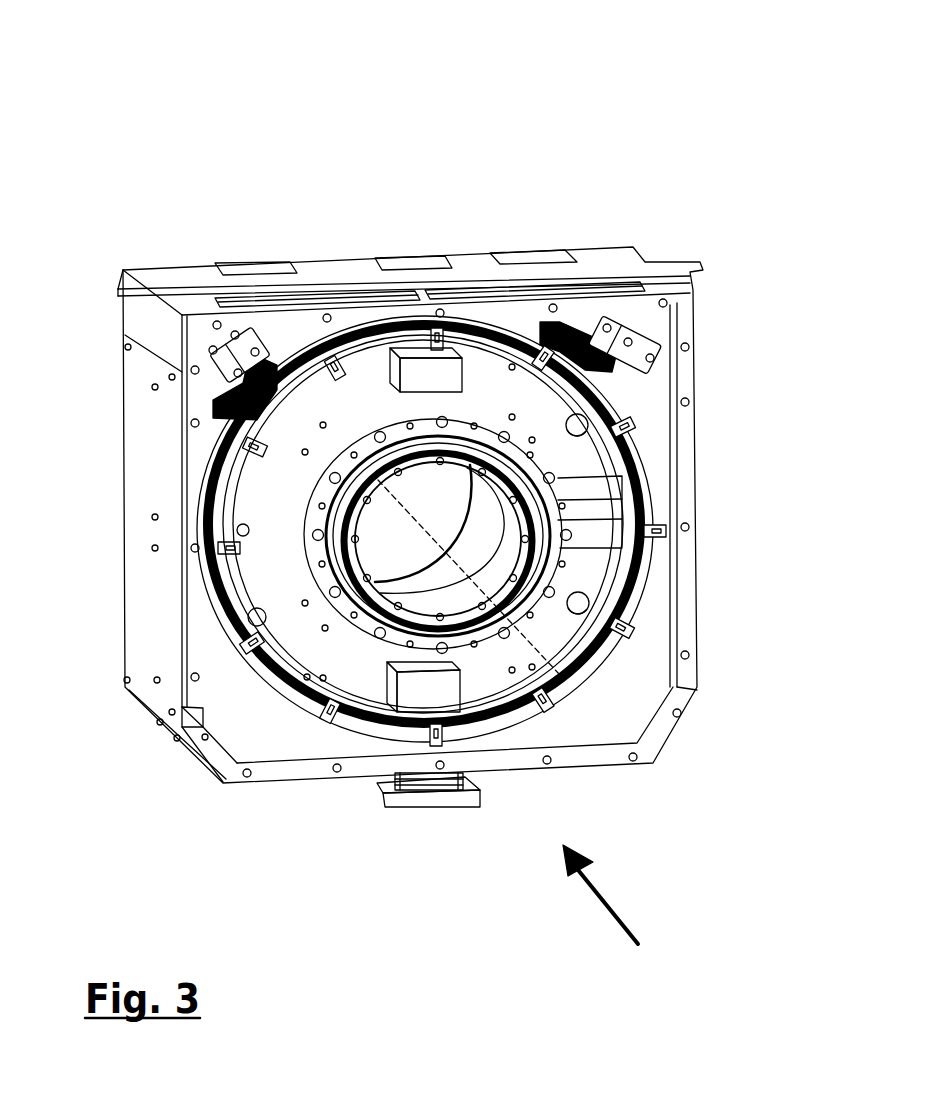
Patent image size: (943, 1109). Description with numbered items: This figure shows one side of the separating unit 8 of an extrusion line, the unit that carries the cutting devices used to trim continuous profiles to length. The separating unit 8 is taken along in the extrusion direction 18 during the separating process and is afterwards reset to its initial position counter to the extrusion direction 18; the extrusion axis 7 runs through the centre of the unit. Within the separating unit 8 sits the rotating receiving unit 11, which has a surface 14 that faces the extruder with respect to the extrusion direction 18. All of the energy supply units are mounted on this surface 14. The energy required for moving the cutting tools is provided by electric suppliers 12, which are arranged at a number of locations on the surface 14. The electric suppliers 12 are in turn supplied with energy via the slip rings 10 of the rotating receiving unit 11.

The extrusion axis 7 is at (585, 700).
The separating unit 8 is at (330, 122).
The slip rings 10 is at (615, 368).
The rotating receiving unit 11 is at (367, 400).
The electric suppliers 12 is at (433, 373).
The surface 14 is at (248, 582).
The extrusion direction 18 is at (617, 907).